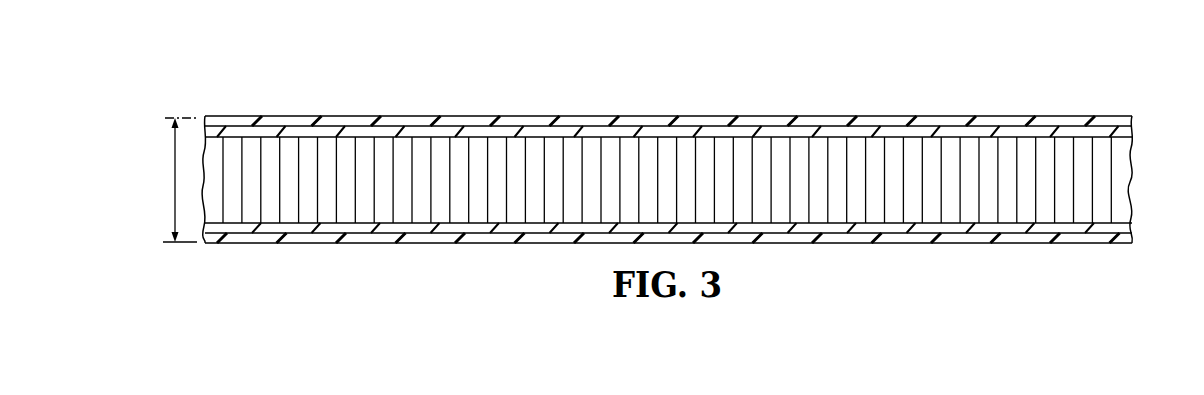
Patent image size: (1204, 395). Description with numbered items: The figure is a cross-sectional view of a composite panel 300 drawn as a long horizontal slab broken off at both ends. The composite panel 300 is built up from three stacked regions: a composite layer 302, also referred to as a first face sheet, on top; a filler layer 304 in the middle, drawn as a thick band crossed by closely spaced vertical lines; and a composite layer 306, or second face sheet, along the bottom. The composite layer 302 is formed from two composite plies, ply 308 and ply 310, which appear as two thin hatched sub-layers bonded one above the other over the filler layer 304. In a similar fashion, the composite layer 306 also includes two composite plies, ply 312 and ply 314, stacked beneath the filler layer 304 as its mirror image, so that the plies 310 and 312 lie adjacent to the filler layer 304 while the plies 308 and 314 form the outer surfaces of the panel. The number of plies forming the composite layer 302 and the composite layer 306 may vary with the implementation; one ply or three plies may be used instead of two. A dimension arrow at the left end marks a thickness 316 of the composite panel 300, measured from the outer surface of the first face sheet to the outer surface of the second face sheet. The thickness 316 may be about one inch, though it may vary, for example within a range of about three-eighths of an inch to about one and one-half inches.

The composite panel 300 is at (534, 59).
The composite layer 302 is at (345, 113).
The filler layer 304 is at (1133, 183).
The composite layer 306 is at (374, 249).
The ply 308 is at (1002, 125).
The ply 310 is at (1133, 129).
The ply 312 is at (1133, 231).
The ply 314 is at (973, 235).
The thickness 316 is at (175, 181).